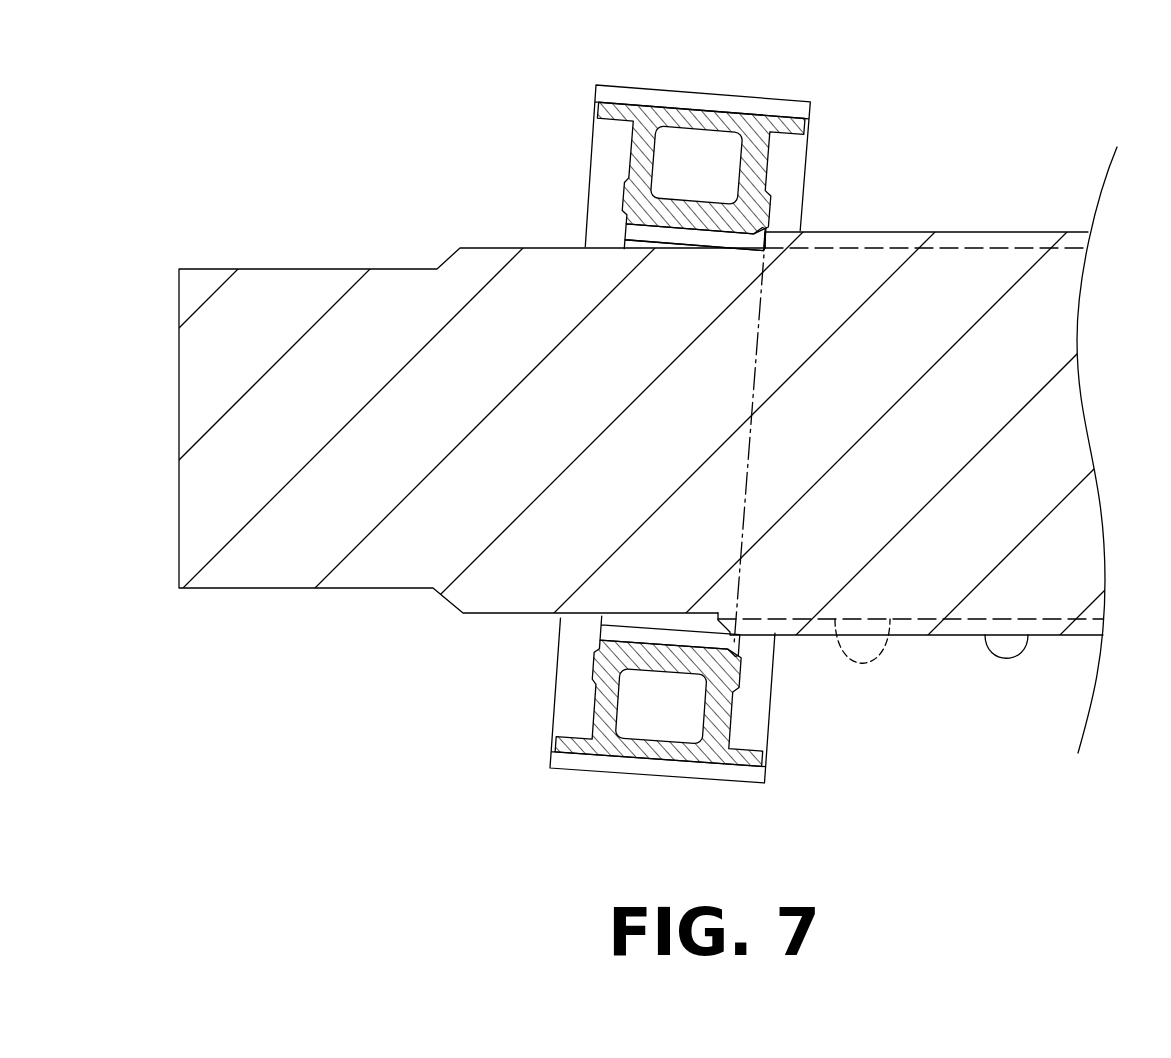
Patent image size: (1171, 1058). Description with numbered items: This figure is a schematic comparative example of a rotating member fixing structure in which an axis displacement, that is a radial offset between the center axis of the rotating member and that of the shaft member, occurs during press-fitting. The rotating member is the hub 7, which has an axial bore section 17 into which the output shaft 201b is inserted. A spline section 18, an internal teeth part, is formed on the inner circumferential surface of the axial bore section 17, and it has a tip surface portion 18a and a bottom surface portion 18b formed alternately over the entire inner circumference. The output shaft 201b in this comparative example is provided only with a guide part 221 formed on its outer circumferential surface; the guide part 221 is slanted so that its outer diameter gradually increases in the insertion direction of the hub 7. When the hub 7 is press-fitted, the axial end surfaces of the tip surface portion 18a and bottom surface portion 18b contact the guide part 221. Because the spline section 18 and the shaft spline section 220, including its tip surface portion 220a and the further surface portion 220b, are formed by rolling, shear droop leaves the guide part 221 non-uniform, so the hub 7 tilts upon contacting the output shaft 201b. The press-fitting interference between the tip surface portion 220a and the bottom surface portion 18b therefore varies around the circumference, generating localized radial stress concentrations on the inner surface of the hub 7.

The hub 7 is at (529, 758).
The axial bore section 17 is at (690, 246).
The spline section 18 is at (584, 631).
The tip surface portion 18a is at (658, 613).
The bottom surface portion 18b is at (625, 245).
The output shaft 201b is at (1059, 121).
The spline section 220 is at (873, 222).
The tip surface portion 220a is at (1030, 630).
The projection 220b is at (897, 625).
The guide part 221 is at (727, 233).